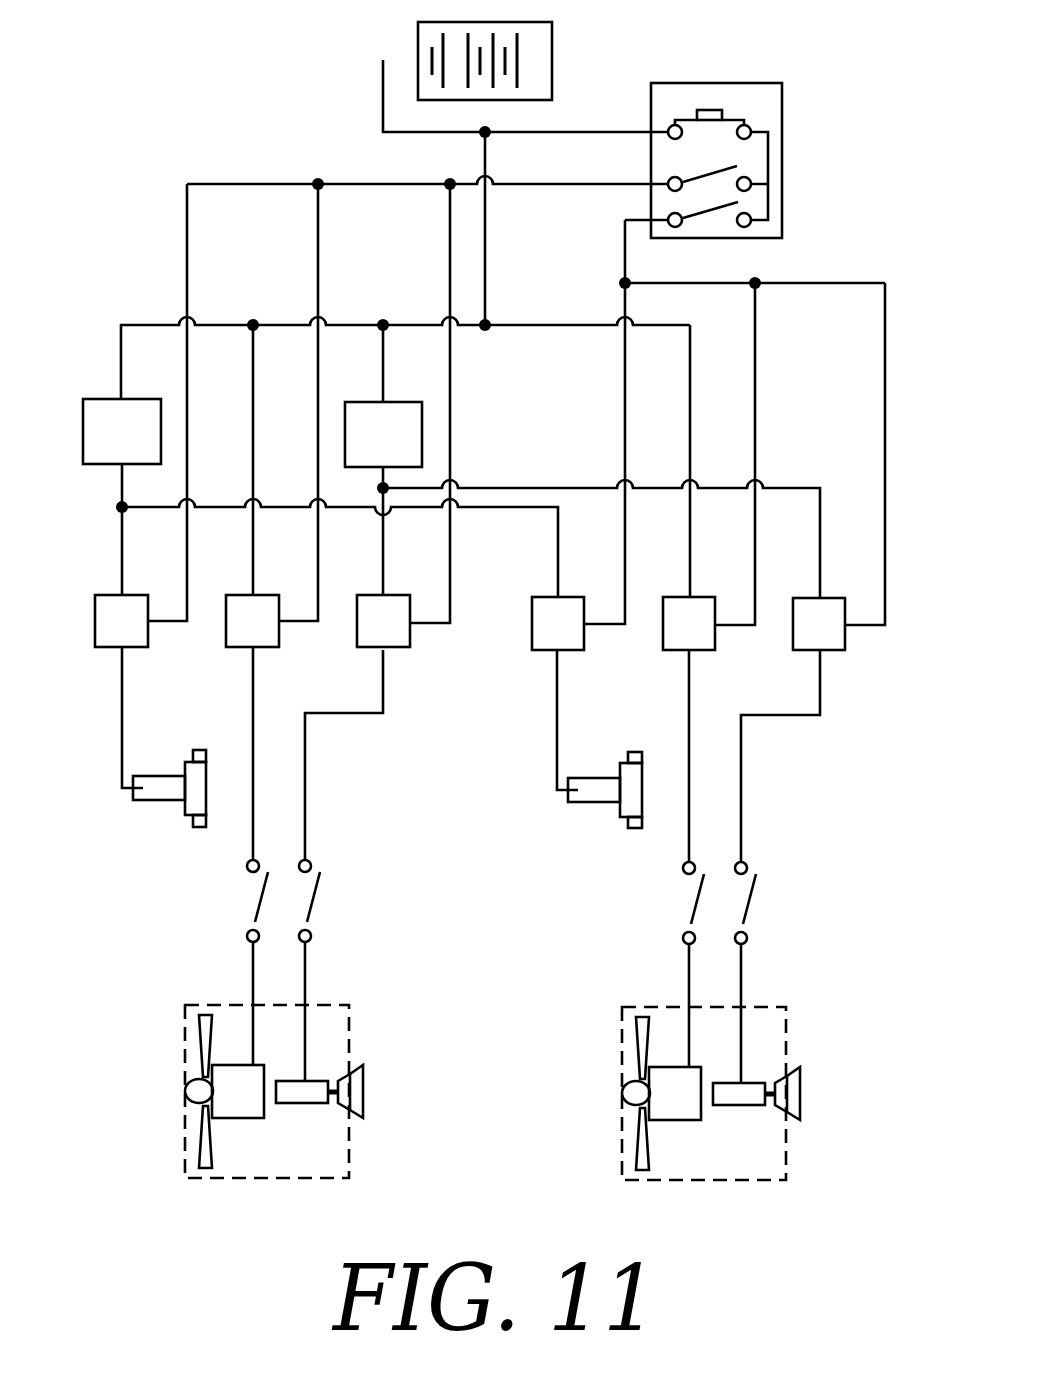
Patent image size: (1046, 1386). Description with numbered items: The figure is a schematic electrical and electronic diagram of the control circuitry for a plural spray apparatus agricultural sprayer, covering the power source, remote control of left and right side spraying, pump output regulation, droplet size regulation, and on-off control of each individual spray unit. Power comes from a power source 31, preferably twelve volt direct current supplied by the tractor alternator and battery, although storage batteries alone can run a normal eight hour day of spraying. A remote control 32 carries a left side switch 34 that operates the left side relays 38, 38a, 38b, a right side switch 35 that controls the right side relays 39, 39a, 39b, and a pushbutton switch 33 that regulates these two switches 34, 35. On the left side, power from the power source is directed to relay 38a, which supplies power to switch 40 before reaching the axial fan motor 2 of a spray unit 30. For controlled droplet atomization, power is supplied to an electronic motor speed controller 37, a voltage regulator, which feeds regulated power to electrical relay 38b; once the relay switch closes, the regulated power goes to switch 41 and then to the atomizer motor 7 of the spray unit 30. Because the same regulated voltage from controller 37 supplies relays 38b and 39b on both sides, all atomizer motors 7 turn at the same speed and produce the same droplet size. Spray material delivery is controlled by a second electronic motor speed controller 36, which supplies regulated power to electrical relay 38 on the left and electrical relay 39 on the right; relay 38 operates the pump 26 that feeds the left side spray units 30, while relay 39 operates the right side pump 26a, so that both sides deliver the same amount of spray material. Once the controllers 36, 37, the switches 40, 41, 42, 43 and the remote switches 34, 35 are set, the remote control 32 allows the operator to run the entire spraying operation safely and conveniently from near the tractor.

The axial fan motor 2 is at (238, 1065).
The atomizer motor 7 is at (312, 1081).
The pump 26 is at (170, 776).
The right side pump 26a is at (603, 778).
The spray unit 30 is at (350, 1055).
The power source 31 is at (552, 47).
The remote control 32 is at (783, 92).
The pushbutton switch 33 is at (713, 110).
The left side switch 34 is at (750, 182).
The right side switch 35 is at (750, 217).
The electronic motor speed controller 36 is at (125, 418).
The electronic motor speed controller 37 is at (380, 423).
The electrical relay 38 is at (115, 595).
The relay 38a is at (245, 595).
The electrical relay 38b is at (376, 595).
The electrical relay 39 is at (556, 597).
The relay 39a is at (688, 597).
The electrical relay 39b is at (815, 598).
The switch 40 is at (246, 863).
The switch 41 is at (313, 863).
The switch 42 is at (683, 865).
The switch 43 is at (749, 865).